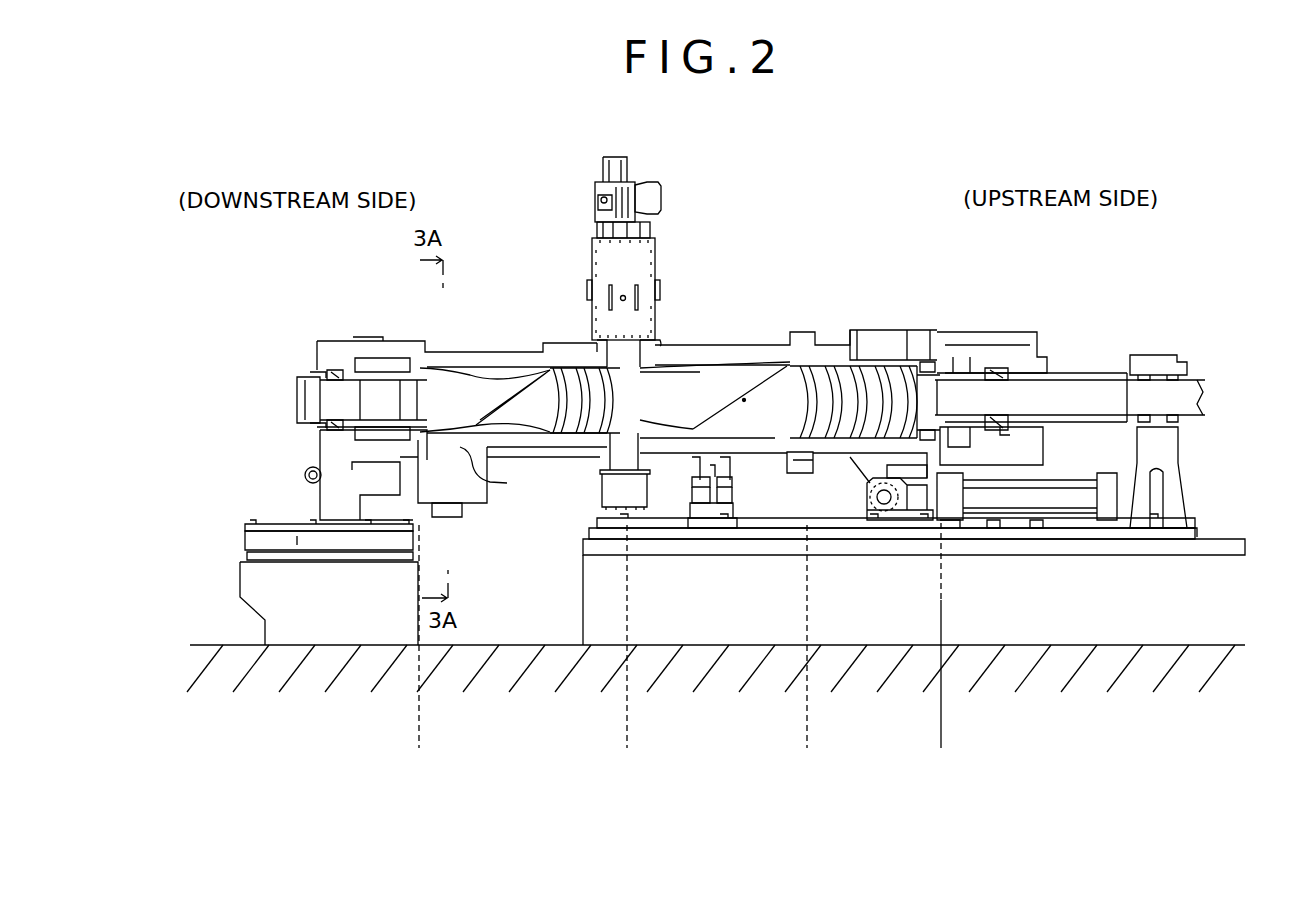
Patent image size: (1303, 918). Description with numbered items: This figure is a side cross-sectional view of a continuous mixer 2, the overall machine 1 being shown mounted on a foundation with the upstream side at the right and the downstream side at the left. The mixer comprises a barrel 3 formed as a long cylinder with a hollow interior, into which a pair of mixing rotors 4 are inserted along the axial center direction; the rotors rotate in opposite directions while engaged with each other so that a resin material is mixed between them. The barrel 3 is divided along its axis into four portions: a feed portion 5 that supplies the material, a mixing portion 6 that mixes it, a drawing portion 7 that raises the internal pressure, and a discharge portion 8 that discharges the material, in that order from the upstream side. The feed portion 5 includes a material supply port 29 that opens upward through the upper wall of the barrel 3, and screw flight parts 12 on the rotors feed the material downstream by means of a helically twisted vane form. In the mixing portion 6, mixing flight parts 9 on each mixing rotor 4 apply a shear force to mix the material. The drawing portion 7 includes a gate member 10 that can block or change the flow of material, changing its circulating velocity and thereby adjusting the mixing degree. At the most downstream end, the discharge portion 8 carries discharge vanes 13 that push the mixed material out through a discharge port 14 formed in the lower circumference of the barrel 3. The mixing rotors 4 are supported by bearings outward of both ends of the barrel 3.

The extruder 1 is at (478, 532).
The continuous mixer 2 is at (969, 163).
The barrel 3 is at (740, 355).
The mixing rotors 4 is at (678, 380).
The feed portion 5 is at (807, 727).
The mixing portion 6 is at (627, 727).
The drawing portion 7 is at (674, 166).
The discharge portion 8 is at (419, 727).
The mixing flight part 9 is at (745, 402).
The gate member 10 is at (620, 350).
The screw flight parts 12 is at (890, 365).
The discharge vanes 13 is at (427, 350).
The discharge port 14 is at (500, 475).
The material supply port 29 is at (866, 358).